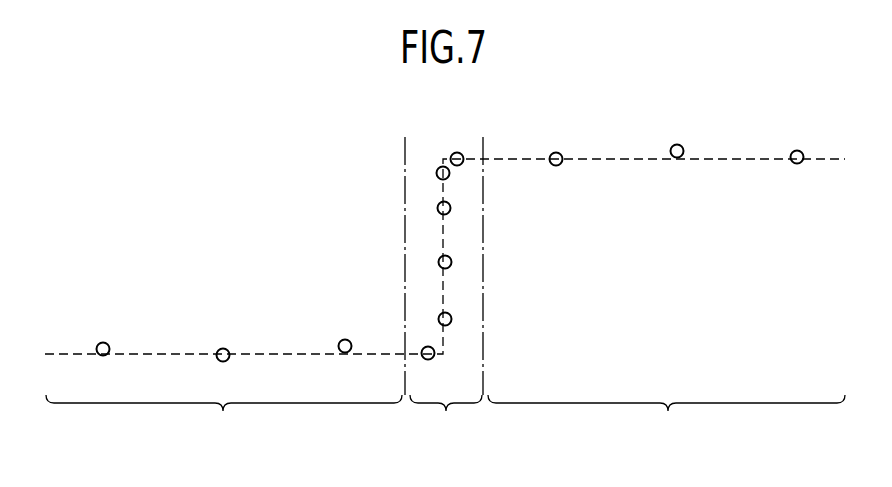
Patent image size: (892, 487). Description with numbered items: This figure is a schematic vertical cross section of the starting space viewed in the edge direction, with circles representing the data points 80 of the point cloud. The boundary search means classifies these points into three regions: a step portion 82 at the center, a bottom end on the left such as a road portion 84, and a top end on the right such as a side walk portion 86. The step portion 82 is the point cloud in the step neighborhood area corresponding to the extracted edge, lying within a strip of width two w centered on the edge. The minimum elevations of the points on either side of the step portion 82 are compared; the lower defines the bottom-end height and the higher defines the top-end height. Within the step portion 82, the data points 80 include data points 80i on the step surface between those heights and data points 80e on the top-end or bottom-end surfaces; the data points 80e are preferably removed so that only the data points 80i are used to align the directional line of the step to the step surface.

The data points 80 is at (223, 348).
The data points located on the surface of the top end or bottom end 80e is at (456, 152).
The data points located on the step surface 80i is at (450, 174).
The step portion 82 is at (444, 292).
The road portion 84 is at (224, 421).
The side walk portion 86 is at (666, 420).